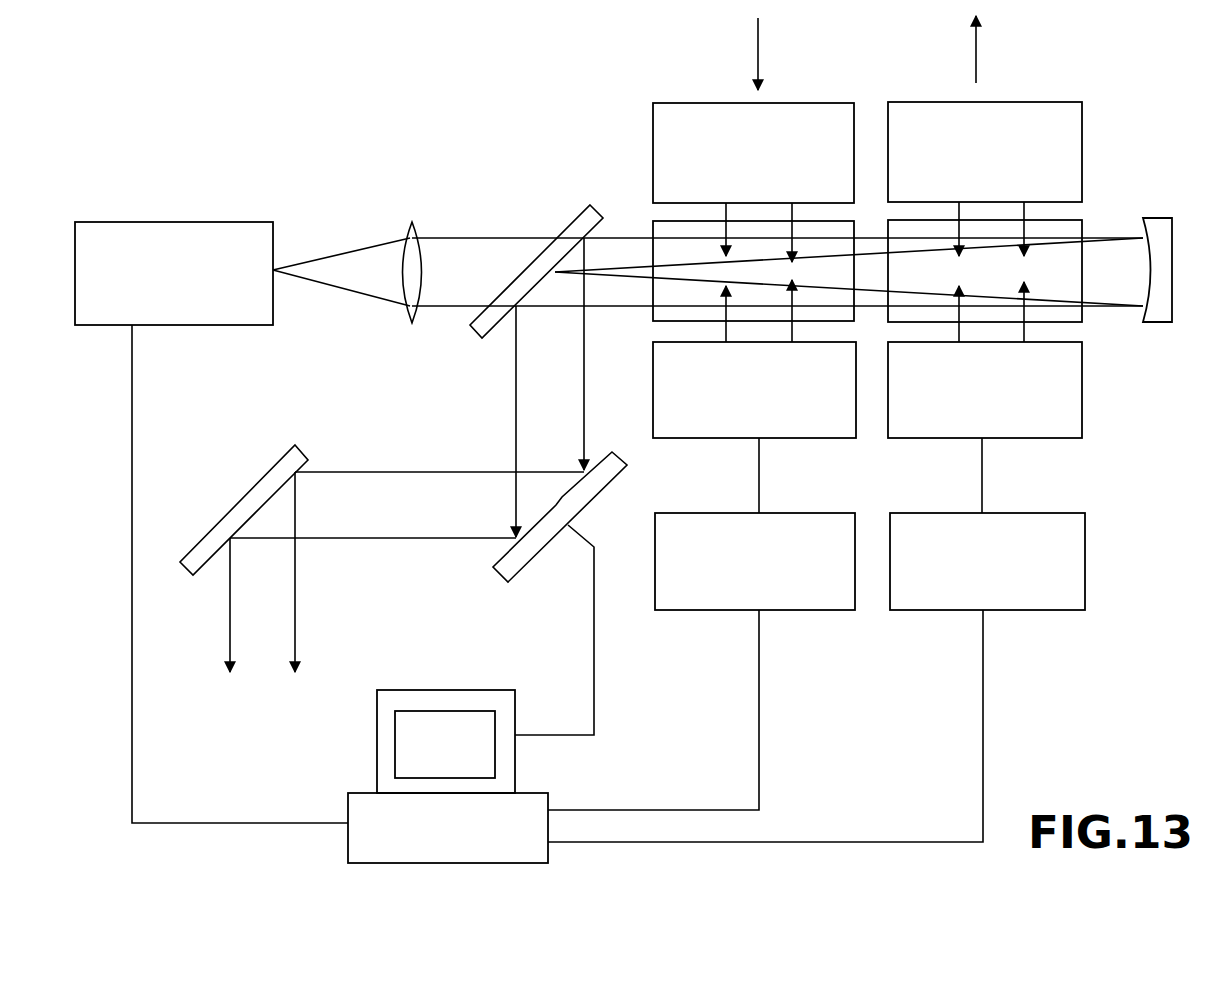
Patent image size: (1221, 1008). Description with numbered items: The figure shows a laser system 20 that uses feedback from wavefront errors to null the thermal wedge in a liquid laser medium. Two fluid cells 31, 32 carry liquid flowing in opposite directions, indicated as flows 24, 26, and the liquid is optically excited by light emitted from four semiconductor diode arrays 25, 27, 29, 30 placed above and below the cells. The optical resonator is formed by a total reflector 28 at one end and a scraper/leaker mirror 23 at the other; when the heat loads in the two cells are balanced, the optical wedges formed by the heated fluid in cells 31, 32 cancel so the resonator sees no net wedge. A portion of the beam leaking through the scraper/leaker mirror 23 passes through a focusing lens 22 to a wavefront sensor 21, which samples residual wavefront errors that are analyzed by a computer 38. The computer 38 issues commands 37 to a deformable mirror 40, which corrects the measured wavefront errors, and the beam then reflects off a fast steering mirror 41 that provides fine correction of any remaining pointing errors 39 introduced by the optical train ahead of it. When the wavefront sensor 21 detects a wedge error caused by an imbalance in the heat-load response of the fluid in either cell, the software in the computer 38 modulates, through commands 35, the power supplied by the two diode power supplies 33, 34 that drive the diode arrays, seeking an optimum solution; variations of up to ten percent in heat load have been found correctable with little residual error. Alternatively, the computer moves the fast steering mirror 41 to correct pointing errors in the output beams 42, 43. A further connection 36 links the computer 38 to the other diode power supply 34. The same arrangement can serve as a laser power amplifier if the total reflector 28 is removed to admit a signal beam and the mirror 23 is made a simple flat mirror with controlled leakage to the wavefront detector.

The laser system 20 is at (256, 125).
The wavefront sensor 21 is at (200, 222).
The focusing lens 22 is at (408, 225).
The scraper/leaker mirror 23 is at (572, 215).
The fluid flow 24 is at (756, 63).
The semiconductor diode array 25 is at (653, 135).
The fluid flow 26 is at (976, 52).
The semiconductor diode array 27 is at (1082, 125).
The total reflector 28 is at (1150, 218).
The semiconductor diode array 29 is at (1038, 438).
The semiconductor diode array 30 is at (820, 438).
The fluid cell 31 is at (1082, 218).
The fluid cell 32 is at (653, 221).
The diode power supply 33 is at (1085, 580).
The diode power supply 34 is at (822, 610).
The commands 35 is at (985, 705).
The control line 36 is at (762, 730).
The commands 37 is at (594, 690).
The computer 38 is at (348, 803).
The pointing errors 39 is at (132, 760).
The deformable mirror 40 is at (500, 575).
The fast steering mirror 41 is at (278, 462).
The beam 42 is at (230, 618).
The beam 43 is at (297, 620).